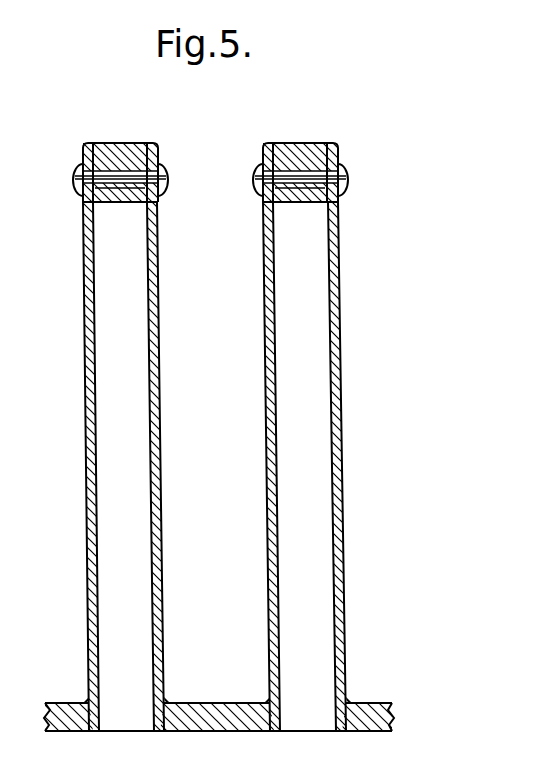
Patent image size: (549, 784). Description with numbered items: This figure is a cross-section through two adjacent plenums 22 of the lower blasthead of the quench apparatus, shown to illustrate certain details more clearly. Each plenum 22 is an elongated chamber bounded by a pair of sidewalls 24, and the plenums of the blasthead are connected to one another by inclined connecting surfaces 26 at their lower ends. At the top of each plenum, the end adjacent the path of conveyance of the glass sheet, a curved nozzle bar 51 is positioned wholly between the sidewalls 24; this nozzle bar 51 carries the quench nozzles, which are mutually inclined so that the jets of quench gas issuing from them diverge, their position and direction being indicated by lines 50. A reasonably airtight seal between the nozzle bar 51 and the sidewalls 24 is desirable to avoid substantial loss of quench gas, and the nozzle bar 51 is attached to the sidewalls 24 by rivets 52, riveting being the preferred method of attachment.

The plenum 22 is at (300, 467).
The sidewall 24 is at (337, 612).
The inclined connecting surface 26 is at (208, 702).
The line indicating jets of quench gas 50 is at (118, 186).
The nozzle bar 51 is at (131, 160).
The rivet 52 is at (278, 203).